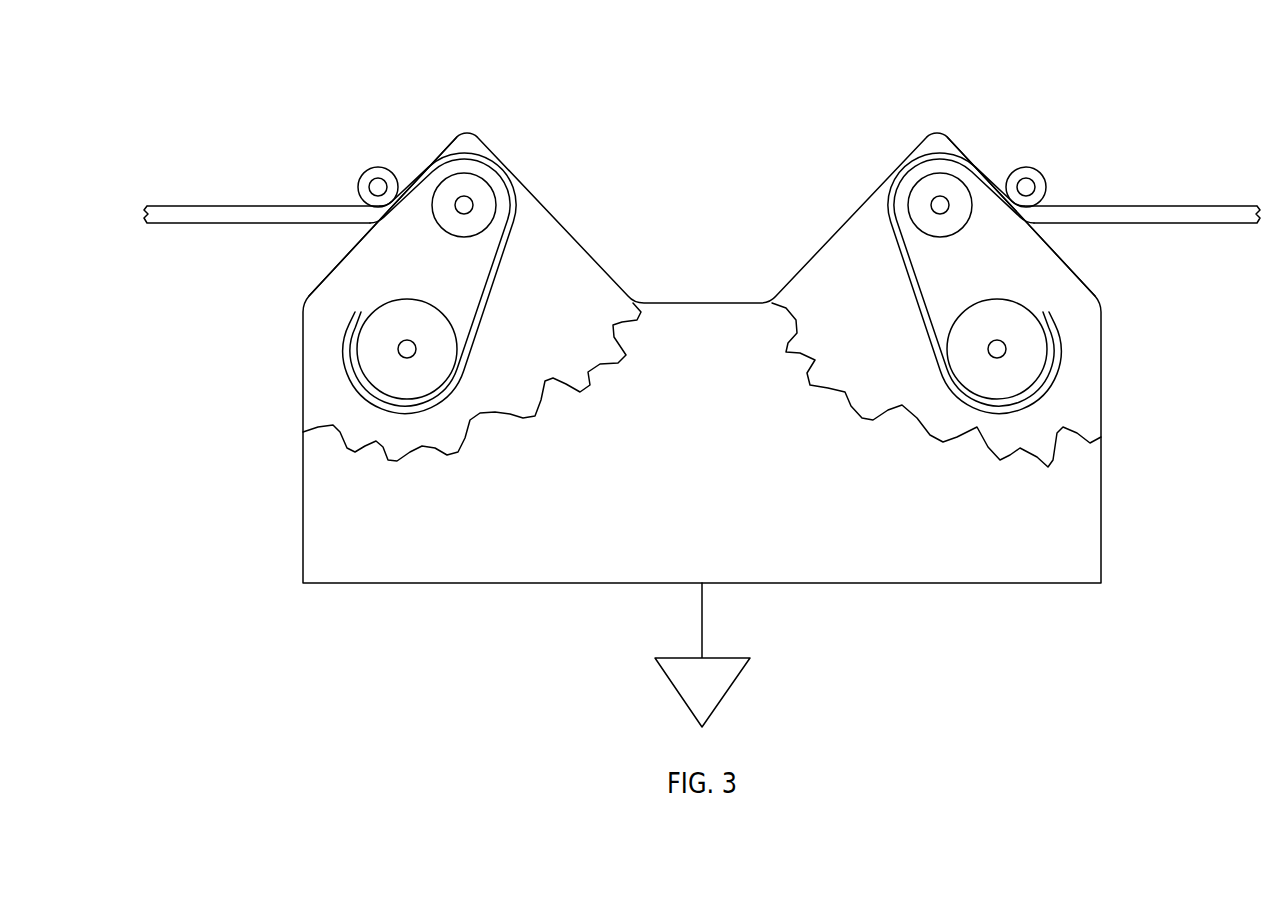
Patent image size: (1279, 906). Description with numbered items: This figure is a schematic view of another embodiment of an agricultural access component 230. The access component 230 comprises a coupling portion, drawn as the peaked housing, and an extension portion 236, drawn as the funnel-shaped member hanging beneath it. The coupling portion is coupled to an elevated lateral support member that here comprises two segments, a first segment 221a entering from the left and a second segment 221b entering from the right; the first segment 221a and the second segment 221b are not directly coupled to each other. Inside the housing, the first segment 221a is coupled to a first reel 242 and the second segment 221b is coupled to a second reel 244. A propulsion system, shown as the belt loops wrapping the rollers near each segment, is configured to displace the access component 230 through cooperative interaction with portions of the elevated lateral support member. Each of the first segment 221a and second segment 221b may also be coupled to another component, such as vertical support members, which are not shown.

The agricultural access component 230 is at (369, 78).
The first segment 221a is at (267, 217).
The second segment 221b is at (1137, 215).
The first reel 242 is at (403, 307).
The second reel 244 is at (1002, 308).
The extension portion 236 is at (690, 687).